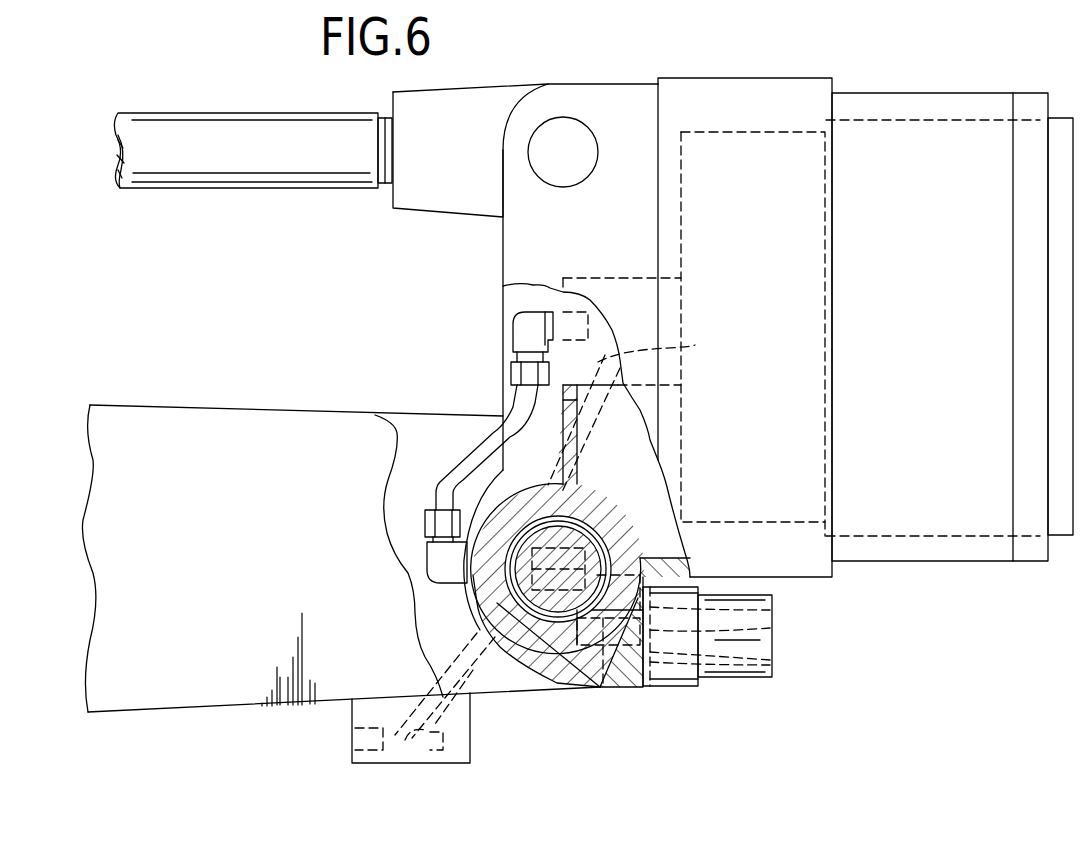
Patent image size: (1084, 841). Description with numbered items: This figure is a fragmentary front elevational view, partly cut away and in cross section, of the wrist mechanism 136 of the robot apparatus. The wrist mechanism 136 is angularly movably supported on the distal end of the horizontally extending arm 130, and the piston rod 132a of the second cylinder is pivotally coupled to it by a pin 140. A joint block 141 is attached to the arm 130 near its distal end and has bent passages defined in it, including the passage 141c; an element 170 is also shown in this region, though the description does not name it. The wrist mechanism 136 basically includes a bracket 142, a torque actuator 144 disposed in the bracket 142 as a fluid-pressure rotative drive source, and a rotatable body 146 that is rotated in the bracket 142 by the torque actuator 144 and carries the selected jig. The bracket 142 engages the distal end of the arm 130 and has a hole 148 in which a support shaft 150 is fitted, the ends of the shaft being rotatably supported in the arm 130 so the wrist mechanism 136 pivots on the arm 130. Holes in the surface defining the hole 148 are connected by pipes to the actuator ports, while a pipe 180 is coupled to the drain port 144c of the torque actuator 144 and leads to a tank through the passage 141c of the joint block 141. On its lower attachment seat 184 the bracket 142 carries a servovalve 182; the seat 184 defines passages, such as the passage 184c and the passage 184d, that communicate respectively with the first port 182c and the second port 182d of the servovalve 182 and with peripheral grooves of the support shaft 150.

The arm 130 is at (207, 422).
The piston rod 132a is at (243, 147).
The wrist mechanism 136 is at (664, 70).
The pin 140 is at (560, 140).
The bracket 142 is at (622, 117).
The torque actuator 144 is at (735, 137).
The drain port 144c is at (713, 336).
The rotatable body 146 is at (1063, 128).
The hole 148 is at (552, 622).
The support shaft 150 is at (567, 622).
The bolt 170 is at (430, 690).
The pipe 180 is at (588, 423).
The servovalve 182 is at (772, 677).
The first port 182c is at (772, 663).
The second port 182d is at (775, 609).
The attachment seat 184 is at (700, 677).
The passage 184c is at (633, 688).
The passage 184d is at (628, 610).
The joint block 141 is at (463, 730).
The passage 141c is at (470, 743).